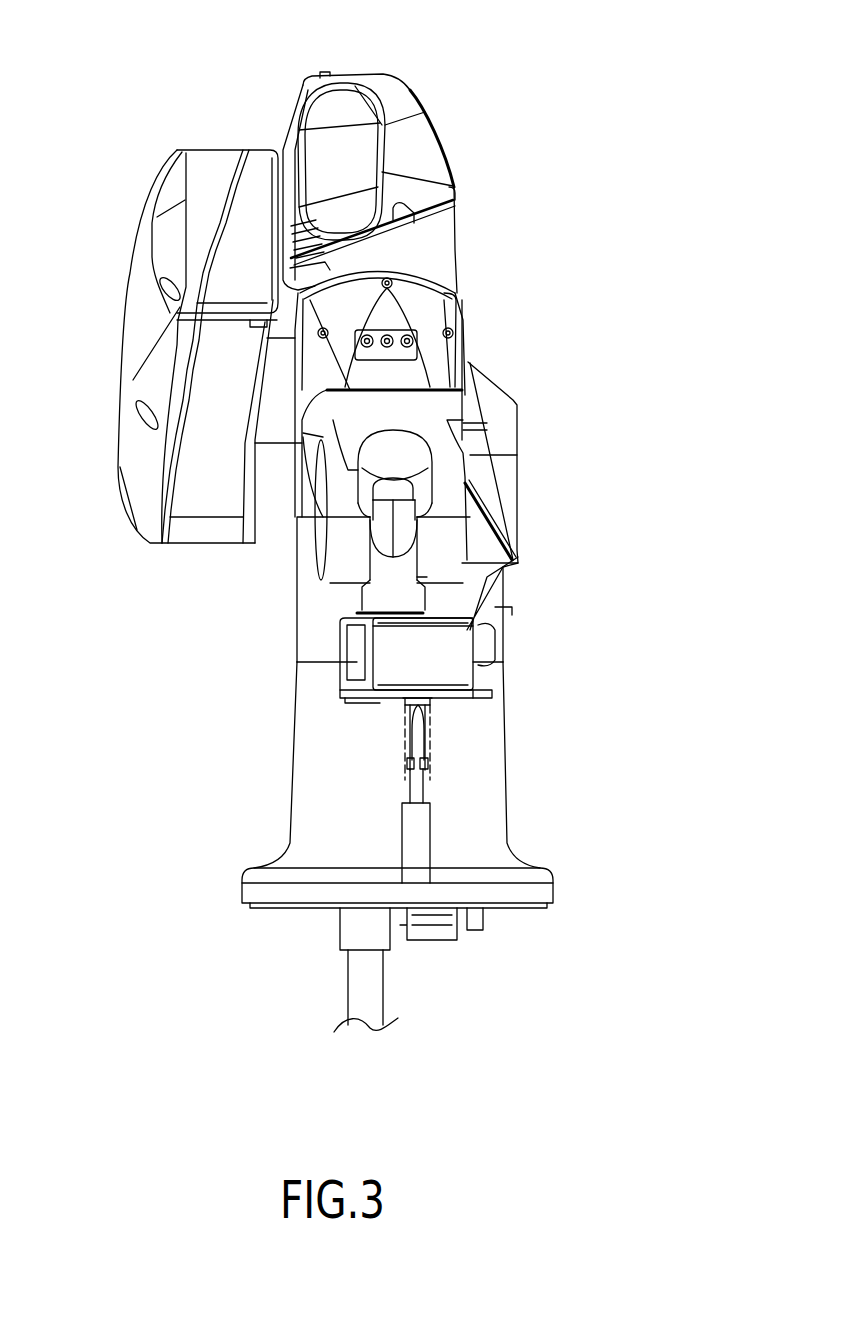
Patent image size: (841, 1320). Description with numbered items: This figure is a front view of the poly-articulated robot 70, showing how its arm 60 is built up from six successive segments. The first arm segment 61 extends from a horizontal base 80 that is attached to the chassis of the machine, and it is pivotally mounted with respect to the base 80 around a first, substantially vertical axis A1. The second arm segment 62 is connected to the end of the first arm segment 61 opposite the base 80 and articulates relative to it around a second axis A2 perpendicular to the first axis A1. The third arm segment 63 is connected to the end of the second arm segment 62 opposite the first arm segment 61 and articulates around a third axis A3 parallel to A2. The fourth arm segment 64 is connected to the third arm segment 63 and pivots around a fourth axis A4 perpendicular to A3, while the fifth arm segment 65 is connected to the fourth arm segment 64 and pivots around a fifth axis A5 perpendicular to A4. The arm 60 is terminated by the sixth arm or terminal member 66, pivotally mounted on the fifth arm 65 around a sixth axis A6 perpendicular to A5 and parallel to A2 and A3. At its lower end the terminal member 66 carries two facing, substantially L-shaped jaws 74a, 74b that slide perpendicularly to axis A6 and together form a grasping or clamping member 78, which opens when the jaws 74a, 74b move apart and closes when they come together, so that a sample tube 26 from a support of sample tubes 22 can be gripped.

The robot 70 is at (538, 168).
The arm 60 is at (114, 300).
The second arm segment 62 is at (128, 343).
The third arm segment 63 is at (426, 150).
The fourth arm segment 64 is at (463, 345).
The fifth arm segment 65 is at (313, 543).
The sixth arm segment 66 is at (377, 598).
The first arm segment 61 is at (492, 612).
The clamping member 78 is at (447, 728).
The L-shaped jaw 74a is at (407, 767).
The L-shaped jaw 74b is at (430, 768).
The sample tube 26 is at (428, 789).
The base 80 is at (308, 742).
The support of sample tubes 22 is at (430, 838).
The first axis A1 is at (398, 860).
The second axis A2 is at (560, 467).
The third axis A3 is at (540, 242).
The fourth axis A4 is at (393, 430).
The fifth axis A5 is at (270, 530).
The sixth axis A6 is at (396, 641).